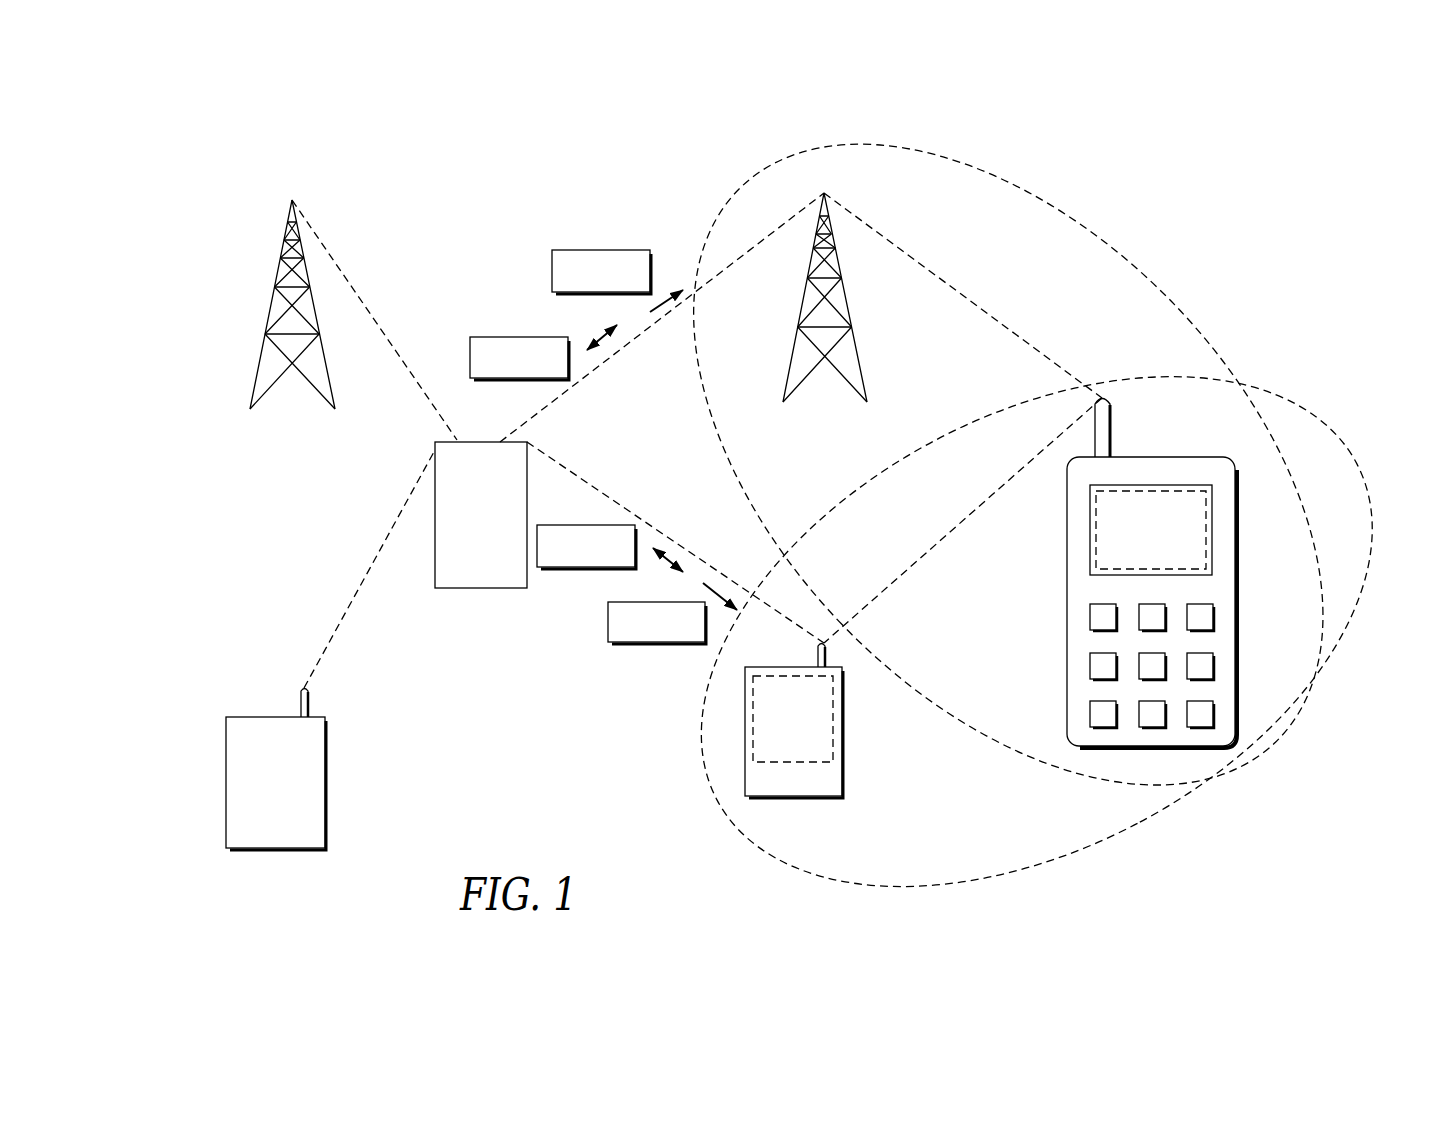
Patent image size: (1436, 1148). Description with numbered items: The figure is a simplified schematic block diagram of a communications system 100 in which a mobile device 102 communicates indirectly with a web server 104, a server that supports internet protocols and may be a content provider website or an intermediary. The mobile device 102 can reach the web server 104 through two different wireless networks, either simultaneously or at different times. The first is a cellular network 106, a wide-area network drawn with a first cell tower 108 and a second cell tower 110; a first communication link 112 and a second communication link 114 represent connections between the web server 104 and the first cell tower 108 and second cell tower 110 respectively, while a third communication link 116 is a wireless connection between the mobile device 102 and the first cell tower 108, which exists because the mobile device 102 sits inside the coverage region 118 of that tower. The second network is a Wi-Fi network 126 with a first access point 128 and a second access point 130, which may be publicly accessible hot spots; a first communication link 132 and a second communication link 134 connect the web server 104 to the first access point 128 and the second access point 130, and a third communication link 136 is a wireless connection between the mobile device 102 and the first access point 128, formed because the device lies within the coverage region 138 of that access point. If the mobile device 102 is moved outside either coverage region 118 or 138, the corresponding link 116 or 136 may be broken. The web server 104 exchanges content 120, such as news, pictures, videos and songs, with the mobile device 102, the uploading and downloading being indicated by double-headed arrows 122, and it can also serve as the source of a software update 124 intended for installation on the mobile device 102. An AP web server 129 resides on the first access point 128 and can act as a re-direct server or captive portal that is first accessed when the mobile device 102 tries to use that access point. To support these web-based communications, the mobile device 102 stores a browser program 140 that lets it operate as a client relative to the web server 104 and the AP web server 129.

The communications system 100 is at (1257, 184).
The mobile device 102 is at (1191, 440).
The web server 104 is at (482, 441).
The cellular network 106 is at (240, 238).
The first cell tower 108 is at (805, 297).
The second cell tower 110 is at (275, 305).
The first communication link 112 is at (605, 347).
The second communication link 114 is at (373, 318).
The third communication link 116 is at (963, 292).
The coverage region 118 is at (750, 176).
The content 120 is at (520, 337).
The double-headed arrows 122 is at (603, 342).
The software update 124 is at (552, 262).
The Wi-Fi network 126 is at (318, 574).
The first access point 128 is at (858, 740).
The AP web server 129 is at (833, 703).
The second access point 130 is at (352, 750).
The first communication link 132 is at (676, 545).
The second communication link 134 is at (371, 564).
The third communication link 136 is at (955, 529).
The coverage region 138 is at (1278, 394).
The browser program 140 is at (1206, 534).